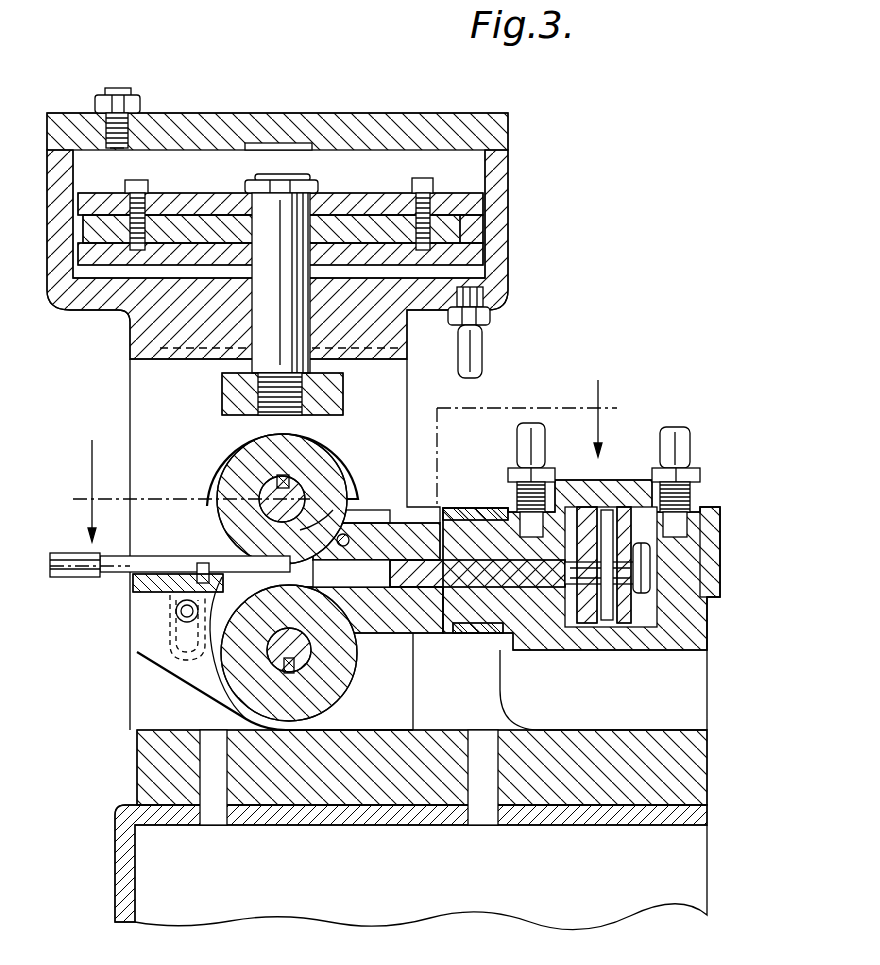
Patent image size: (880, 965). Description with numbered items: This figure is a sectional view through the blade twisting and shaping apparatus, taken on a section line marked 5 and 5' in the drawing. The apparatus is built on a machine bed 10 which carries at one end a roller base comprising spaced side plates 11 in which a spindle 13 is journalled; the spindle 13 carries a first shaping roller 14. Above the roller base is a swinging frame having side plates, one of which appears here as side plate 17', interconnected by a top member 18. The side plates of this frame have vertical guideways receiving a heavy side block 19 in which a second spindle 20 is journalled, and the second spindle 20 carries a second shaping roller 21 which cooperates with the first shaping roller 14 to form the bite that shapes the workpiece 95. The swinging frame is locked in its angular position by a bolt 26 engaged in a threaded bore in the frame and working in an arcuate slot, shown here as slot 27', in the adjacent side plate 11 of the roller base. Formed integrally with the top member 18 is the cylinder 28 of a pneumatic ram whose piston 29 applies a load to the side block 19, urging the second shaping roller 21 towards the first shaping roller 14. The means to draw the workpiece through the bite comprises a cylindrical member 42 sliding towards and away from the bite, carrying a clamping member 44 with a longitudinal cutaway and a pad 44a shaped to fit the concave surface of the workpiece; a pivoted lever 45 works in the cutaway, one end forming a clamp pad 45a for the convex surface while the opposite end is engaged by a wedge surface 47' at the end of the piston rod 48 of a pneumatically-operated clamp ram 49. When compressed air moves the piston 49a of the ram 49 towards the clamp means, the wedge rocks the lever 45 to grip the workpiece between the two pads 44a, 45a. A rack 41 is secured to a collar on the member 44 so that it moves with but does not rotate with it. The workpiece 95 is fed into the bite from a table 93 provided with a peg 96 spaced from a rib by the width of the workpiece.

The machine bed 10 is at (118, 855).
The side plates 11 is at (145, 762).
The spindle 13 is at (272, 650).
The first shaping roller 14 is at (313, 688).
The frame wall 17' is at (251, 544).
The top member 18 is at (170, 349).
The side block 19 is at (222, 392).
The second spindle 20 is at (276, 488).
The second shaping roller 21 is at (310, 443).
The bolt 26 is at (180, 620).
The guide edge 27' is at (246, 653).
The cylinder 28 is at (470, 231).
The piston 29 is at (480, 200).
The rack 41 is at (170, 549).
The cylindrical member 42 is at (705, 650).
The cylindrical member 44 is at (440, 565).
The pad 44a is at (360, 635).
The pivoted lever 45 is at (380, 533).
The clamp pad 45a is at (283, 560).
The housing 47' is at (581, 605).
The piston rod 48 is at (545, 592).
The clamp ram 49 is at (607, 530).
The piston 49a is at (612, 627).
The section line 5 is at (348, 461).
The cover plate 5' is at (475, 544).
The table 93 is at (145, 588).
The workpiece 95 is at (176, 603).
The peg 96 is at (225, 572).